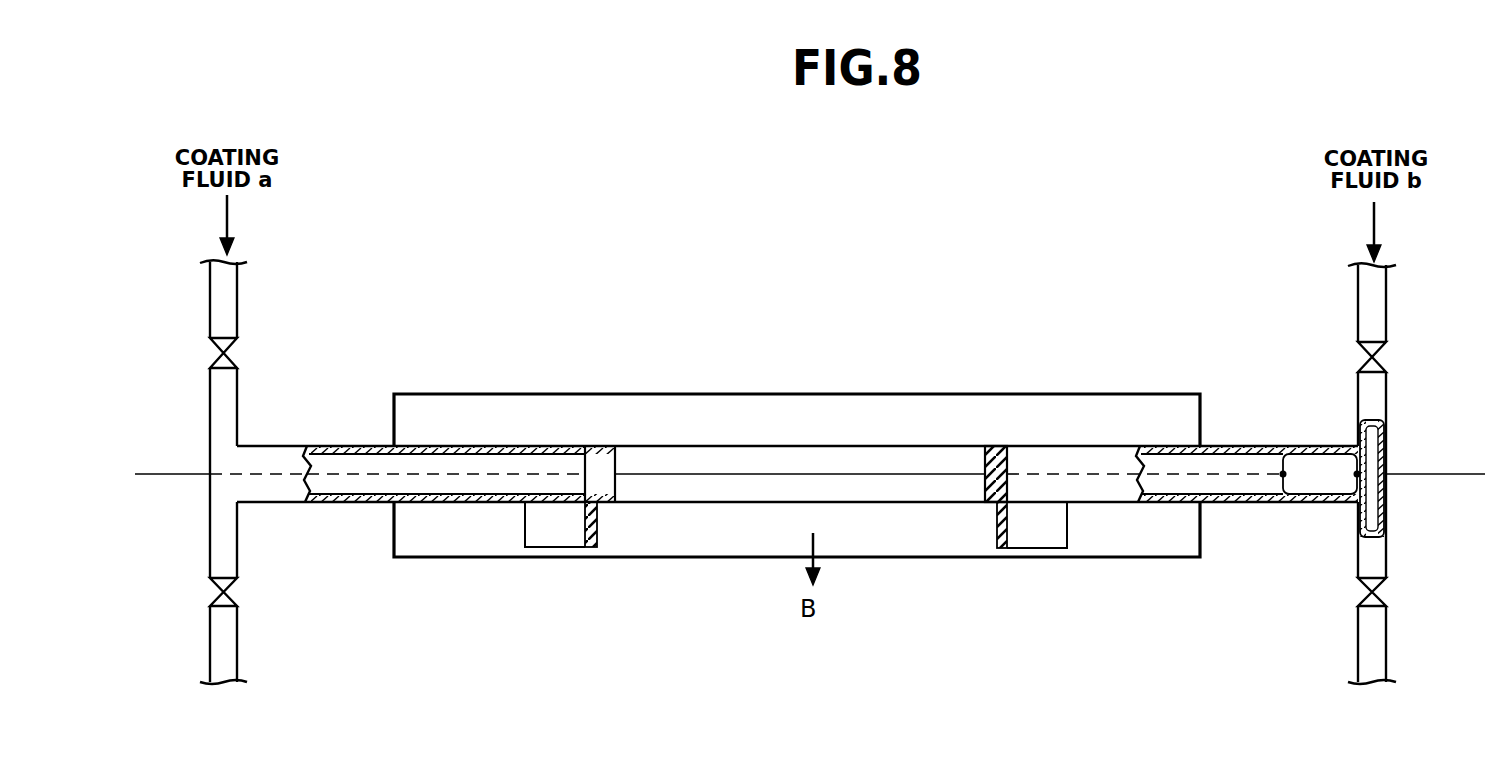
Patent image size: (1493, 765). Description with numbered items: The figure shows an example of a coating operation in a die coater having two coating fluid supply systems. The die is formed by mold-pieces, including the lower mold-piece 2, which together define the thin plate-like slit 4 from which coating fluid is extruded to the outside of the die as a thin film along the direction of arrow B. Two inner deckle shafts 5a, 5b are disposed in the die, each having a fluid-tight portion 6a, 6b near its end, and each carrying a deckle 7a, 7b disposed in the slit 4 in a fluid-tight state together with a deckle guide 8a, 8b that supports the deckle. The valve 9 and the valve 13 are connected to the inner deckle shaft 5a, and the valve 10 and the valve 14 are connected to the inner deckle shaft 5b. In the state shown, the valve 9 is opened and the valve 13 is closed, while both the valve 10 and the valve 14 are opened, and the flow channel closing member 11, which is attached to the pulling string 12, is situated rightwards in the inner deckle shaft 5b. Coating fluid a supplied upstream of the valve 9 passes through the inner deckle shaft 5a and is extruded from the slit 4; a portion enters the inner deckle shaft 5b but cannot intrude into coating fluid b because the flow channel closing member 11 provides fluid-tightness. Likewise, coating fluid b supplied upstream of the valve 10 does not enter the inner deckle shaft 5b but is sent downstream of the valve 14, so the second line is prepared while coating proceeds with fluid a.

The lower mold-piece 2 is at (782, 420).
The slit 4 is at (770, 546).
The inner deckle shaft 5a is at (434, 446).
The inner deckle shaft 5b is at (1108, 446).
The fluid-tight portion 6a is at (600, 446).
The fluid-tight portion 6b is at (992, 446).
The deckle 7a is at (590, 548).
The deckle 7b is at (1000, 549).
The deckle guide 8a is at (538, 548).
The deckle guide 8b is at (1045, 549).
The valve 9 is at (241, 353).
The valve 10 is at (1389, 358).
The flow channel closing member 11 is at (1342, 473).
The pulling string 12 is at (1452, 480).
The valve 13 is at (240, 592).
The valve 14 is at (1389, 592).